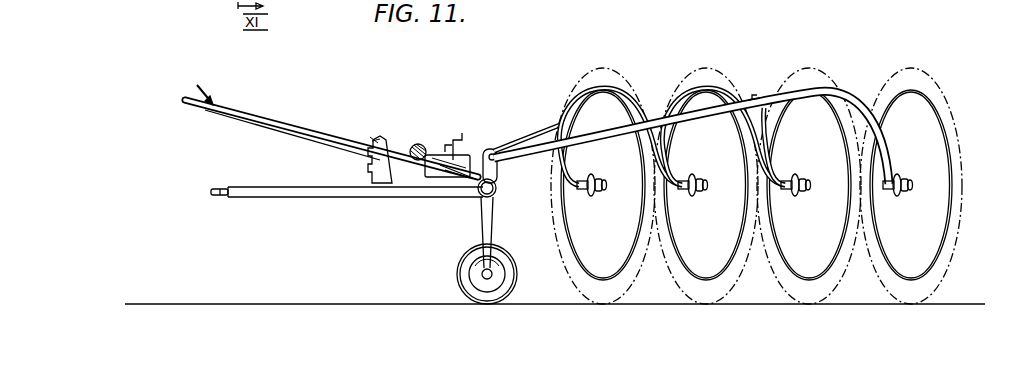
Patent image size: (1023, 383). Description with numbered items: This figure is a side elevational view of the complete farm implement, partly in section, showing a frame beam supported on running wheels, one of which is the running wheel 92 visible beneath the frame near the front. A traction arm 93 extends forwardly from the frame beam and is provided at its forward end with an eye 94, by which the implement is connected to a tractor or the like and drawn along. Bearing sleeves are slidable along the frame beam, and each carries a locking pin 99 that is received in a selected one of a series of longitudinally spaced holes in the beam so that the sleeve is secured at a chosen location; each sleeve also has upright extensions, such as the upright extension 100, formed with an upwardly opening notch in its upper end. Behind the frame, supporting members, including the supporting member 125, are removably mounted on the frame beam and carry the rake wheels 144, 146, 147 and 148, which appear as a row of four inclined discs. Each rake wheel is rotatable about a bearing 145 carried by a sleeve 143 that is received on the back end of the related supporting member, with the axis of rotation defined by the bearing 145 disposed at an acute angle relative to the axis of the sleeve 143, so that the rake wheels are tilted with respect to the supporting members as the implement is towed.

The running wheel 92 is at (458, 277).
The traction arm 93 is at (241, 199).
The eye 94 is at (216, 190).
The locking pin 99 is at (506, 190).
The upright extension 100 is at (505, 176).
The supporting member 125 is at (753, 97).
The sleeve 143 is at (903, 198).
The rake wheel 144 is at (934, 132).
The bearing 145 is at (912, 170).
The rake wheel 146 is at (834, 96).
The rake wheel 147 is at (723, 88).
The rake wheel 148 is at (624, 87).